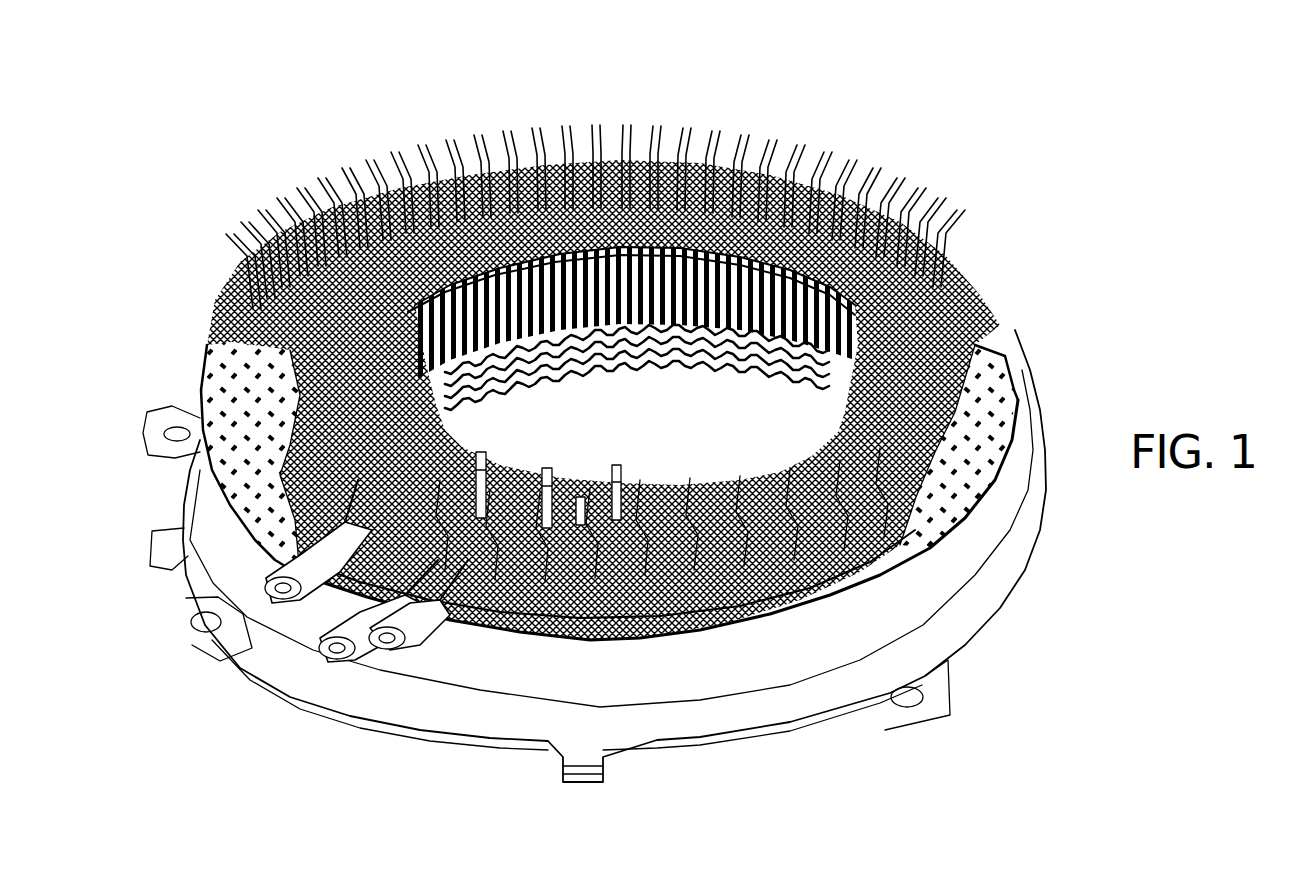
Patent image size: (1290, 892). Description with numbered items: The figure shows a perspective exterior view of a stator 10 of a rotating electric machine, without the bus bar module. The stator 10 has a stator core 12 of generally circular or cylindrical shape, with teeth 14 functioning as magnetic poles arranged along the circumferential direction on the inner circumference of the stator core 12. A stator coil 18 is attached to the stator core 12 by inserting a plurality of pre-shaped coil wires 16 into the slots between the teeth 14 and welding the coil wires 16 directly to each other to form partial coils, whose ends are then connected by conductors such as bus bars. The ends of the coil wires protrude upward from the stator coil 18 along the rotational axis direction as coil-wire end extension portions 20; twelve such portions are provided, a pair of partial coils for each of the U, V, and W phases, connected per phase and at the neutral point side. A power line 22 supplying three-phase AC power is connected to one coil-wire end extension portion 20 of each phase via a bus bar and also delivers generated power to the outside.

The stator 10 is at (737, 95).
The stator core 12 is at (1020, 355).
The teeth 14 is at (698, 335).
The coil wires 16 is at (648, 600).
The stator coil 18 is at (763, 467).
The coil-wire end extension portions 20 is at (620, 470).
The power line 22 is at (470, 590).